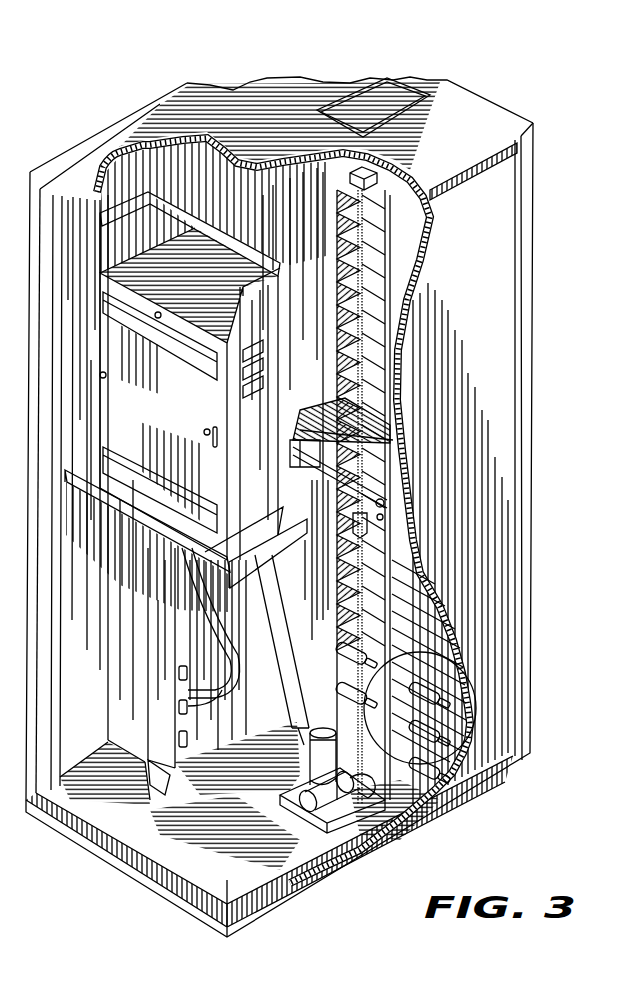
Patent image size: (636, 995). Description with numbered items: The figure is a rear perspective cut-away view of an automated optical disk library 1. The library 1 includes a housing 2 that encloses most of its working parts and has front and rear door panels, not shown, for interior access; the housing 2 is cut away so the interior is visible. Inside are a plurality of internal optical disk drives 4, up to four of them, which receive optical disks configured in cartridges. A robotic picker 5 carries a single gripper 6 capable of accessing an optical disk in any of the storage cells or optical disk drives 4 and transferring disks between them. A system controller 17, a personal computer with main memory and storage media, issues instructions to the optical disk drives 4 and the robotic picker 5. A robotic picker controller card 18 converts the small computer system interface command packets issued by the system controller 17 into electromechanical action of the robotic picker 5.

The automated optical disk library 1 is at (568, 213).
The housing 2 is at (500, 107).
The internal optical disk drives 4 is at (462, 728).
The robotic picker 5 is at (347, 447).
The gripper 6 is at (303, 428).
The system controller 17 is at (170, 419).
The robotic picker controller card 18 is at (165, 745).